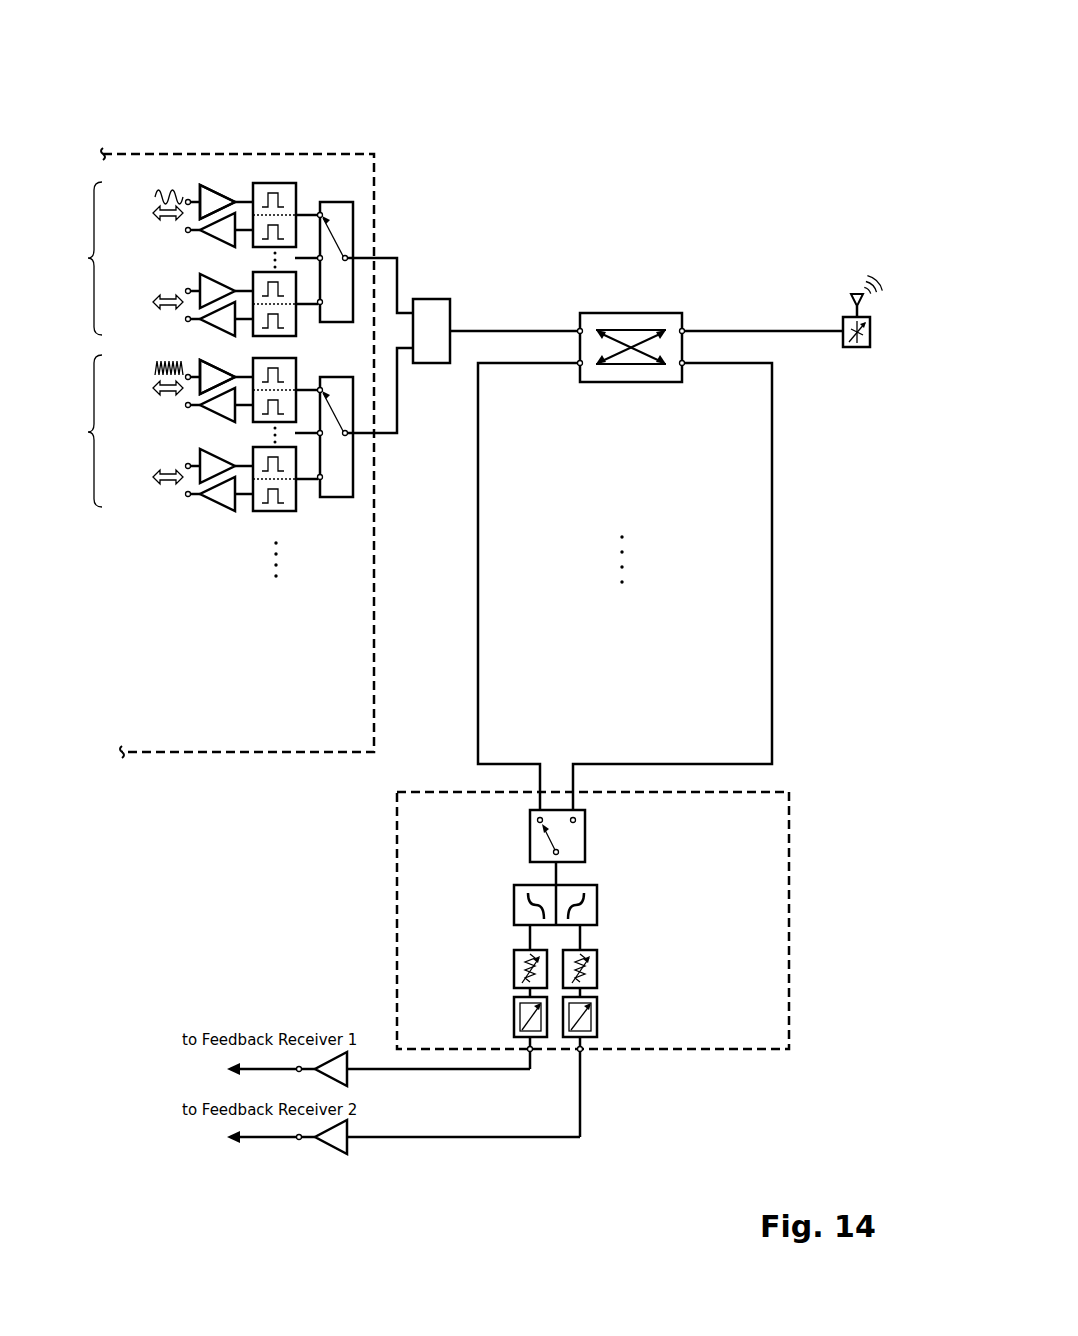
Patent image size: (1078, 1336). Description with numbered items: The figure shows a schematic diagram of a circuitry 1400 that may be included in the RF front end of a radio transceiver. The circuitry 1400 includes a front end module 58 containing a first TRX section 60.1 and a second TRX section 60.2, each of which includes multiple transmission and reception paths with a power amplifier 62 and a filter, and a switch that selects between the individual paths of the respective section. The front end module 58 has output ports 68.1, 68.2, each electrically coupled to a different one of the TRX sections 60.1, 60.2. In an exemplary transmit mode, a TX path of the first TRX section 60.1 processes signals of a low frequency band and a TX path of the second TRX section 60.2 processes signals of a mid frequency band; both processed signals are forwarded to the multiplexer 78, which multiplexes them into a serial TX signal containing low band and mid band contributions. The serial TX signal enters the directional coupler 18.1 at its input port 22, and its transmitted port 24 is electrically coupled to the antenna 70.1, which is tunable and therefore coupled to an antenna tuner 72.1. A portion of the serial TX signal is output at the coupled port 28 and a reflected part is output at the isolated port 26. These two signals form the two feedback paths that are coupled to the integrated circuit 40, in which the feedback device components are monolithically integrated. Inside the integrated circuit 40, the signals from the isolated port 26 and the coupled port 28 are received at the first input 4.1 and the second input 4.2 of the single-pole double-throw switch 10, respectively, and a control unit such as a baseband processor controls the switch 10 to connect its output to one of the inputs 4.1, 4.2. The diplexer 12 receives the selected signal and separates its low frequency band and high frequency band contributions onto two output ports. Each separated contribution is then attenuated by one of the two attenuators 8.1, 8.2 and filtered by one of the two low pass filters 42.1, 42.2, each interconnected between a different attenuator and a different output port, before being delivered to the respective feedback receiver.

The circuitry 1400 is at (220, 64).
The power amplifier 62 is at (214, 185).
The first TRX section 60.1 is at (178, 259).
The second TRX section 60.2 is at (178, 433).
The output port 68.1 is at (376, 256).
The output port 68.2 is at (376, 436).
The multiplexer 78 is at (438, 320).
The directional coupler 18.1 is at (655, 312).
The input port 22 is at (577, 330).
The transmitted port 24 is at (685, 329).
The isolated port 26 is at (574, 368).
The coupled port 28 is at (685, 365).
The antenna 70.1 is at (856, 291).
The antenna tuner 72.1 is at (872, 333).
The front end module 58 is at (208, 756).
The first input 4.1 is at (536, 824).
The second input 4.2 is at (578, 821).
The single-pole double-throw switch 10 is at (587, 856).
The diplexer 12 is at (599, 905).
The attenuator 8.1 is at (512, 965).
The attenuator 8.2 is at (599, 963).
The low pass filter 42.1 is at (512, 1016).
The low pass filter 42.2 is at (599, 1018).
The integrated circuit 40 is at (791, 848).